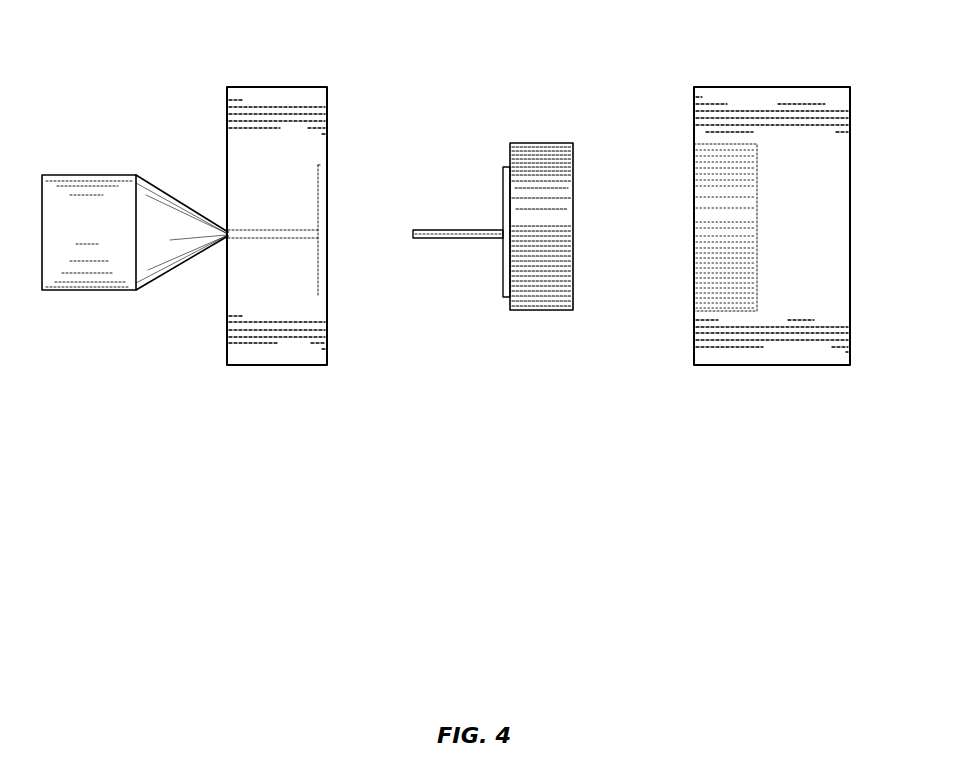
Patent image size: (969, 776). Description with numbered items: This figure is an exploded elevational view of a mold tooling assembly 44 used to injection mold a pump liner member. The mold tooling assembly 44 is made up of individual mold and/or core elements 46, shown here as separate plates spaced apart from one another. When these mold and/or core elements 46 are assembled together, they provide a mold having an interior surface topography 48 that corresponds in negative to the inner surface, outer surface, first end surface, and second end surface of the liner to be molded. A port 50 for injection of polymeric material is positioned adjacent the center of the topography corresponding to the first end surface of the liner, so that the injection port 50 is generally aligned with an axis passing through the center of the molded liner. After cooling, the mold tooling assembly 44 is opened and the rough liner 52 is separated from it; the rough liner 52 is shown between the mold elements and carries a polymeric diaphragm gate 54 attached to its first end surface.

The mold tooling assembly 44 is at (468, 465).
The mold and/or core elements 46 is at (243, 93).
The interior surface topography 48 is at (338, 283).
The port 50 is at (228, 239).
The rough liner 52 is at (545, 311).
The polymeric diaphragm gate 54 is at (505, 187).